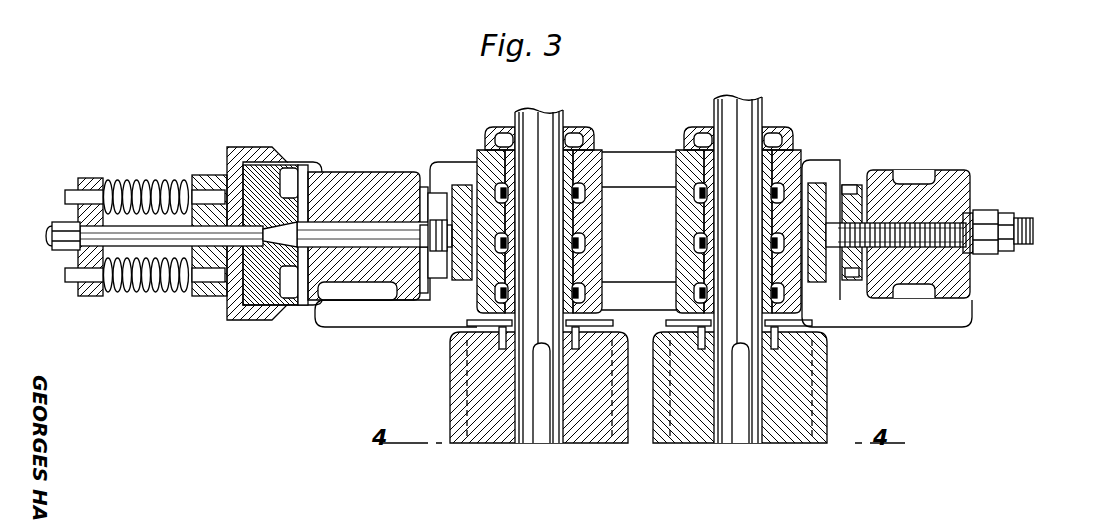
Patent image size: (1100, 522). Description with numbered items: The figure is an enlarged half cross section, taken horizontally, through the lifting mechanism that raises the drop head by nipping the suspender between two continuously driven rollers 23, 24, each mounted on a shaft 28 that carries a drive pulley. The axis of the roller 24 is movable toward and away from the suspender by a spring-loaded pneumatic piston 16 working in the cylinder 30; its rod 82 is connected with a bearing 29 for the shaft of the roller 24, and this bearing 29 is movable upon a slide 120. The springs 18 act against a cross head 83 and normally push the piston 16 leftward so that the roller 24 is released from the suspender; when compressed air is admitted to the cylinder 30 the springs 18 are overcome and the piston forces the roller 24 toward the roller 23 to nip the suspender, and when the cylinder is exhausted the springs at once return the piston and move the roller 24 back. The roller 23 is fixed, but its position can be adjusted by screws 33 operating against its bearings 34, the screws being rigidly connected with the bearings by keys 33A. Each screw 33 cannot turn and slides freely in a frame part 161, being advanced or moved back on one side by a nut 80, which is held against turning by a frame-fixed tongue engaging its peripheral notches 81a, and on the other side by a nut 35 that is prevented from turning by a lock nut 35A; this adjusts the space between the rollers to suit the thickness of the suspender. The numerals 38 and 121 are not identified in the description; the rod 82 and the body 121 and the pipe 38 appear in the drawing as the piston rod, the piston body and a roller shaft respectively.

The spring-loaded pneumatic piston 16 is at (286, 170).
The springs 18 is at (157, 178).
The roller 23 is at (800, 392).
The roller 24 is at (455, 387).
The shaft 28 is at (745, 121).
The vertical pipe 38 is at (556, 126).
The bearing 29 is at (484, 142).
The cylinder 30 is at (266, 150).
The screws 33 is at (974, 207).
The keys 33A is at (818, 184).
The bearings 34 is at (792, 158).
The nut 35 is at (1006, 211).
The lock nut 35A is at (1030, 222).
The nut 80 is at (851, 190).
The peripheral notches 81a is at (855, 278).
The rod 82 is at (66, 250).
The cross head 83 is at (78, 216).
The slide 120 is at (637, 168).
The body with rod 121 is at (363, 224).
The frame part 161 is at (906, 170).